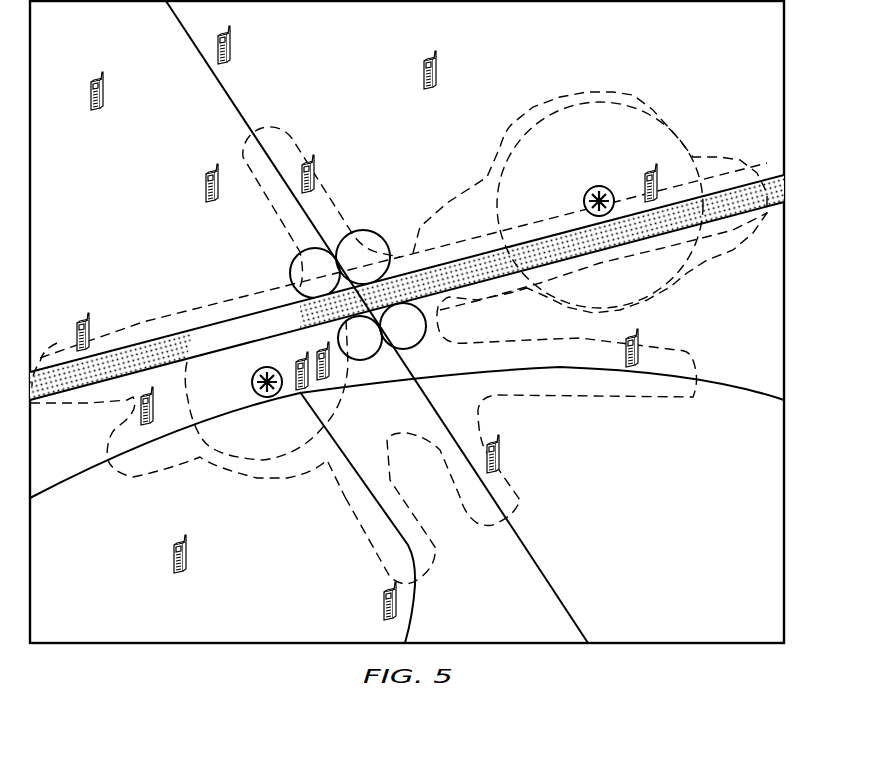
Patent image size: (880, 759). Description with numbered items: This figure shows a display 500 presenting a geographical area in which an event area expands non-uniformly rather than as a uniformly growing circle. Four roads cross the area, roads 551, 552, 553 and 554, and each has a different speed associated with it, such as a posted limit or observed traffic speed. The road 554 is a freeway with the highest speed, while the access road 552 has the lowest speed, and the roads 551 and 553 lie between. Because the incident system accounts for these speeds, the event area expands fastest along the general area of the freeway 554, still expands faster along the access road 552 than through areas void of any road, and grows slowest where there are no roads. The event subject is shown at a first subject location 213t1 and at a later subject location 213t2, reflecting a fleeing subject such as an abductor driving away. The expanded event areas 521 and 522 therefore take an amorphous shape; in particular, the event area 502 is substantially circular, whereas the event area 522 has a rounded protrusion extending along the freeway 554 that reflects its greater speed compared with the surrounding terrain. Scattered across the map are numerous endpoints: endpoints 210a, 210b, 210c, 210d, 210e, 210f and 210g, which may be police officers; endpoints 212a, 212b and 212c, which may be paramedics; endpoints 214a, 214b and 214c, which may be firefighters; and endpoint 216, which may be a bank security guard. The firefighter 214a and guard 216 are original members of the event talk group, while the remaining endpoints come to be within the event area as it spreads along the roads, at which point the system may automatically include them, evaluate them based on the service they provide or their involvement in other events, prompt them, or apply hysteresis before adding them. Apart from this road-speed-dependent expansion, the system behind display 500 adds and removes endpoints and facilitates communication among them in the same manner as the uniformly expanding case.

The display 500 is at (524, 645).
The event area 502 is at (547, 110).
The event area 521 is at (143, 322).
The event area 522 is at (630, 98).
The road 551 is at (70, 480).
The access road 552 is at (420, 592).
The road 553 is at (550, 580).
The freeway 554 is at (193, 330).
The endpoint 216 is at (300, 397).
The subject location 213t1 is at (252, 383).
The subject location 213t2 is at (591, 190).
The endpoint 210a is at (138, 410).
The endpoint 210b is at (172, 560).
The endpoint 210c is at (503, 456).
The endpoint 210d is at (311, 156).
The endpoint 210e is at (422, 76).
The endpoint 210f is at (94, 72).
The endpoint 210g is at (647, 167).
The endpoint 212a is at (80, 316).
The endpoint 212b is at (383, 601).
The endpoint 212c is at (625, 345).
The endpoint 214a is at (330, 384).
The endpoint 214b is at (232, 50).
The endpoint 214c is at (205, 184).